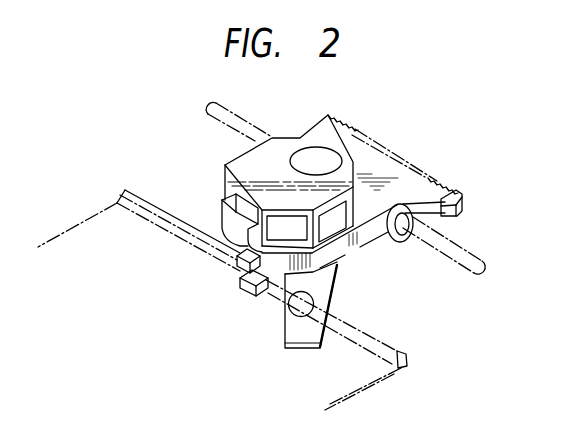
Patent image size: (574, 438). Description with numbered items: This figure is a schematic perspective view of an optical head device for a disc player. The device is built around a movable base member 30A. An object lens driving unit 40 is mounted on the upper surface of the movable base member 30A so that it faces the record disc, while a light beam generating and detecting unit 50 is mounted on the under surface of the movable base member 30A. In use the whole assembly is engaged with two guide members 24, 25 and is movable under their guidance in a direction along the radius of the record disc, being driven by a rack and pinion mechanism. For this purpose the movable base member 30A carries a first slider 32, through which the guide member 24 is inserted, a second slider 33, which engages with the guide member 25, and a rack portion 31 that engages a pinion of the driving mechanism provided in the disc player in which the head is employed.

The object lens driving unit 40 is at (228, 169).
The movable base member 30A is at (373, 157).
The rack portion 31 is at (451, 188).
The guide member 24 is at (467, 237).
The first slider 32 is at (400, 237).
The light beam generating and detecting unit 50 is at (335, 268).
The second slider 33 is at (243, 292).
The guide member 25 is at (392, 343).